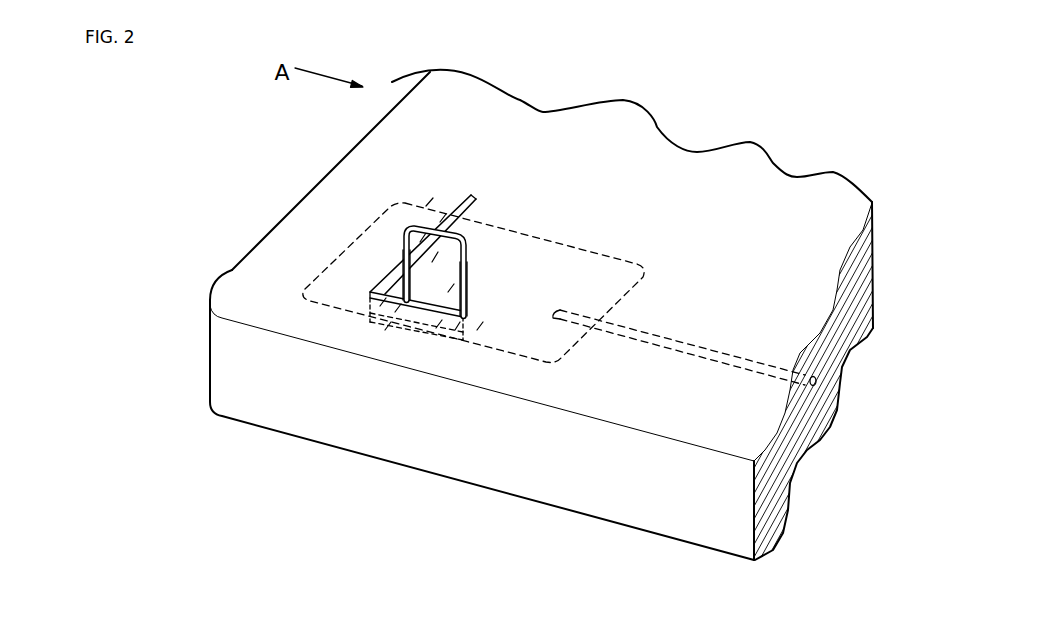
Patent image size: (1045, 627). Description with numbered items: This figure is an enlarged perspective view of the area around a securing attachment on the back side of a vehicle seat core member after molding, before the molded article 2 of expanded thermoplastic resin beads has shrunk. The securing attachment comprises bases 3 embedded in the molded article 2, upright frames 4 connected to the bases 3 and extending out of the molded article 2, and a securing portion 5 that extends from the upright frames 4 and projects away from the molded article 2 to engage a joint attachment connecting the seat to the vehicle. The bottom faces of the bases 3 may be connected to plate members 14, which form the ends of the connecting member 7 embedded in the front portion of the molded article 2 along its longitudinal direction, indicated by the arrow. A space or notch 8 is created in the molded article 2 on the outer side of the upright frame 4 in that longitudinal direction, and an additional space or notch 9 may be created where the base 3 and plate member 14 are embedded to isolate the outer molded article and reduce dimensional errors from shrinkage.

The molded article 2 is at (268, 404).
The base 3 is at (497, 318).
The upright frame 4 is at (398, 252).
The securing portion 5 is at (443, 214).
The connecting member 7 is at (647, 340).
The space or notch 8 is at (447, 300).
The space or notch 9 is at (441, 228).
The plate member 14 is at (317, 278).